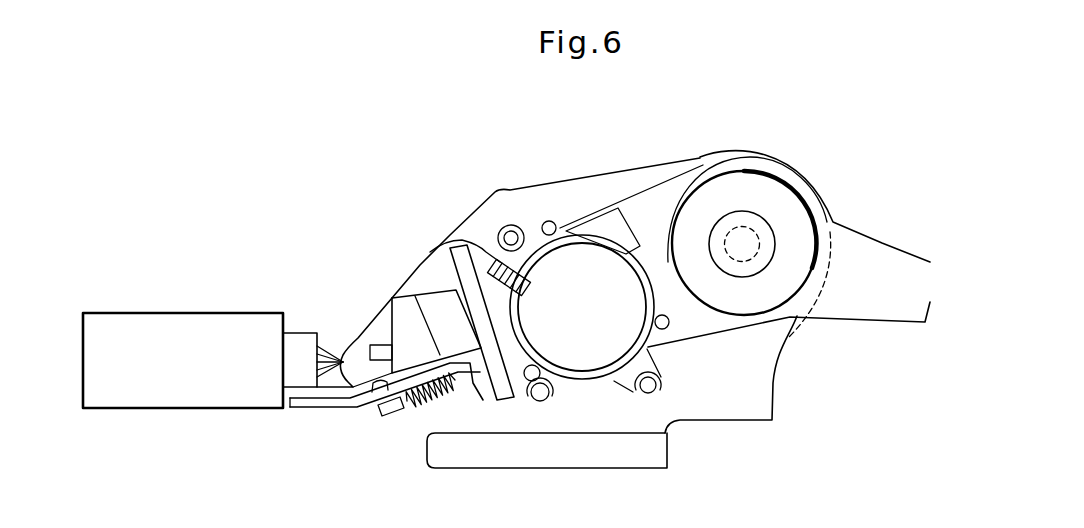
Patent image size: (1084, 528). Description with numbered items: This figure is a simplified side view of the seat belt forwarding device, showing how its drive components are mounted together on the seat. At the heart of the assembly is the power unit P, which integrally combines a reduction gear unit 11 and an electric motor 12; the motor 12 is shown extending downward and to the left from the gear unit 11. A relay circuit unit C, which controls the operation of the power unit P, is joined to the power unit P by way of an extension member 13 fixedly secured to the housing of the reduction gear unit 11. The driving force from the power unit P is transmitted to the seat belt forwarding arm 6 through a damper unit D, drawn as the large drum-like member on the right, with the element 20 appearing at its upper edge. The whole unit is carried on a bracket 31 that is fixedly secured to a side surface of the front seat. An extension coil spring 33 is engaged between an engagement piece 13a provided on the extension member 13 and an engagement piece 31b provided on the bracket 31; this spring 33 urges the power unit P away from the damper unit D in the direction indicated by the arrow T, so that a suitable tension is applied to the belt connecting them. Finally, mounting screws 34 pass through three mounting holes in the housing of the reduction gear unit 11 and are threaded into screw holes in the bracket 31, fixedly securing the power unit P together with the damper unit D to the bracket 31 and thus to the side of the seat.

The seat belt forwarding arm 6 is at (865, 243).
The reduction gear unit 11 is at (592, 238).
The electric motor 12 is at (387, 320).
The extension member 13 is at (352, 408).
The engagement piece 13a is at (480, 390).
The drum 20 is at (702, 175).
The bracket 31 is at (597, 177).
The engagement piece 31b is at (402, 417).
The extension coil spring 33 is at (417, 417).
The mounting screws 34 is at (510, 227).
The relay circuit unit C is at (205, 409).
The damper unit D is at (787, 180).
The power unit P is at (482, 228).
The arrow T is at (428, 424).